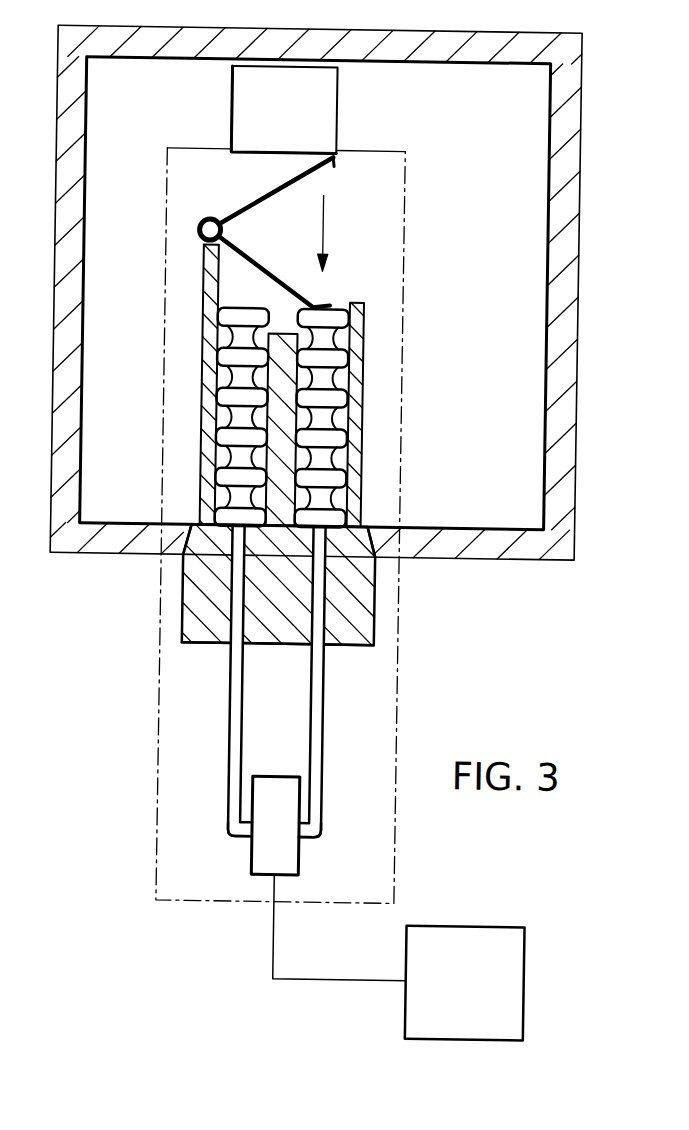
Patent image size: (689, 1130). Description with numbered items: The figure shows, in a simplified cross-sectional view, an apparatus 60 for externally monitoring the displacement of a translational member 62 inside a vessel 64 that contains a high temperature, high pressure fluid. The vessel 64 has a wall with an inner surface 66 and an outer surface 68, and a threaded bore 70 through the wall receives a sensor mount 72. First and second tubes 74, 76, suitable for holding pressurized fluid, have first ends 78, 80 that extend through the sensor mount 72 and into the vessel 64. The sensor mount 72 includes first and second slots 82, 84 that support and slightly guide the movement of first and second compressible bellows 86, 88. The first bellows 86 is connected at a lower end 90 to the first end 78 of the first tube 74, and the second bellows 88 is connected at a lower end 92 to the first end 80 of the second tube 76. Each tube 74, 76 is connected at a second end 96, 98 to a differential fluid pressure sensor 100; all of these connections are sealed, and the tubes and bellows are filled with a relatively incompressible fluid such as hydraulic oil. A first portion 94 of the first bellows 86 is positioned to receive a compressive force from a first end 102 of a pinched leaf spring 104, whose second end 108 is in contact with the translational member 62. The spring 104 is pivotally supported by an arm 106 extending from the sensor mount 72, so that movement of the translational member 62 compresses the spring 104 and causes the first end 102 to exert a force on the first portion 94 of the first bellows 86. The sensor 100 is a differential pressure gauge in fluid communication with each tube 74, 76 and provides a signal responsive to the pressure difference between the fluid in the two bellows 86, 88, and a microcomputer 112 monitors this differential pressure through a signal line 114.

The apparatus 60 is at (402, 252).
The translational member 62 is at (325, 108).
The vessel 64 is at (407, 30).
The inner surface 66 is at (494, 524).
The outer surface 68 is at (493, 559).
The threaded bore 70 is at (185, 562).
The sensor mount 72 is at (184, 646).
The first tube 74 is at (322, 728).
The second tube 76 is at (233, 787).
The first end of first tube 78 is at (347, 543).
The first end of second tube 80 is at (205, 545).
The first slot 82 is at (287, 326).
The second slot 84 is at (270, 318).
The first compressible bellows 86 is at (337, 405).
The second compressible bellows 88 is at (222, 396).
The lower end of first bellows 90 is at (317, 514).
The lower end of second bellows 92 is at (241, 512).
The first portion of first bellows 94 is at (338, 318).
The second end of first tube 96 is at (315, 845).
The second end of second tube 98 is at (235, 849).
The differential fluid pressure sensor 100 is at (281, 790).
The first end of spring 102 is at (312, 300).
The pinched leaf spring 104 is at (248, 202).
The arm 106 is at (202, 273).
The second end of spring 108 is at (312, 168).
The microcomputer 112 is at (493, 991).
The signal line 114 is at (288, 980).